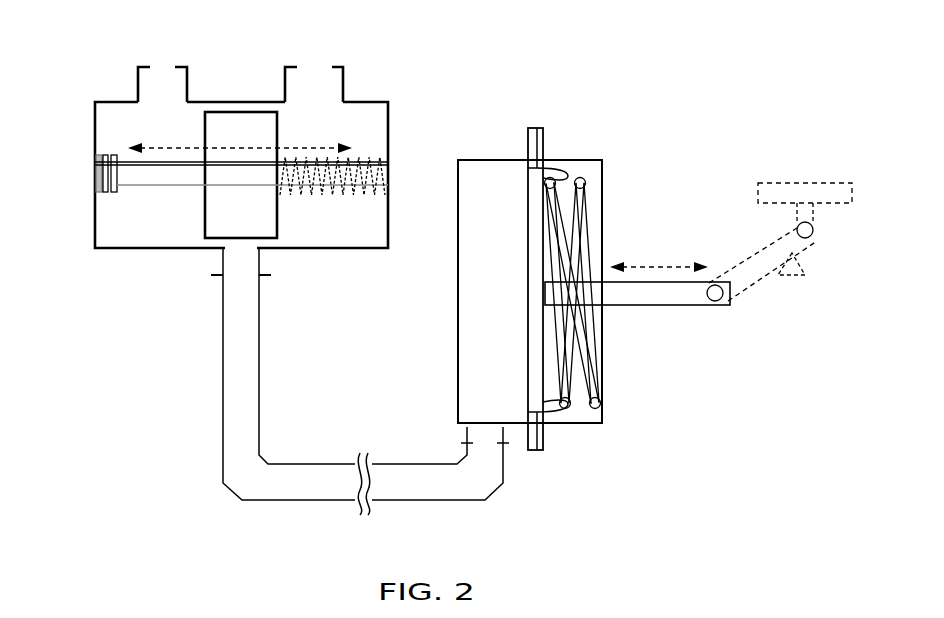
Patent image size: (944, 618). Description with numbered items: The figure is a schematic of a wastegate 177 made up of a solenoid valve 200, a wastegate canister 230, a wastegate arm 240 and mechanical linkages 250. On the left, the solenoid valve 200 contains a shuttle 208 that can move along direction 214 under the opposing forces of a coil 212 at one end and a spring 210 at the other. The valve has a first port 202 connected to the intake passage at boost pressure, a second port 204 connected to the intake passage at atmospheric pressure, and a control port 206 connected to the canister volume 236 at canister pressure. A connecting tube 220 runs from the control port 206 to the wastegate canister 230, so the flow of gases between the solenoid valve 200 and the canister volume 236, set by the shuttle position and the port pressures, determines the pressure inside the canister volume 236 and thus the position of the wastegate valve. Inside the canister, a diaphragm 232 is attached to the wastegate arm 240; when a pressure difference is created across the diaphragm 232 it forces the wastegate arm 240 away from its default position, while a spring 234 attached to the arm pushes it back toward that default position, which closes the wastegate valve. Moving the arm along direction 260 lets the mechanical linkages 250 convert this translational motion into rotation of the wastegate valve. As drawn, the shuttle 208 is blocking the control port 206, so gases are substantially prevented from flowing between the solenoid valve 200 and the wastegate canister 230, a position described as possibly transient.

The wastegate 177 is at (126, 452).
The solenoid valve 200 is at (86, 74).
The first port 202 is at (166, 76).
The second port 204 is at (314, 76).
The control port 206 is at (243, 268).
The shuttle 208 is at (254, 224).
The spring 210 is at (372, 192).
The coil 212 is at (105, 152).
The direction 214 is at (298, 150).
The connecting tube 220 is at (420, 500).
The wastegate canister 230 is at (476, 158).
The diaphragm 232 is at (526, 202).
The spring 234 is at (577, 158).
The canister volume 236 is at (488, 292).
The wastegate arm 240 is at (660, 306).
The mechanical linkages 250 is at (746, 256).
The direction 260 is at (660, 262).